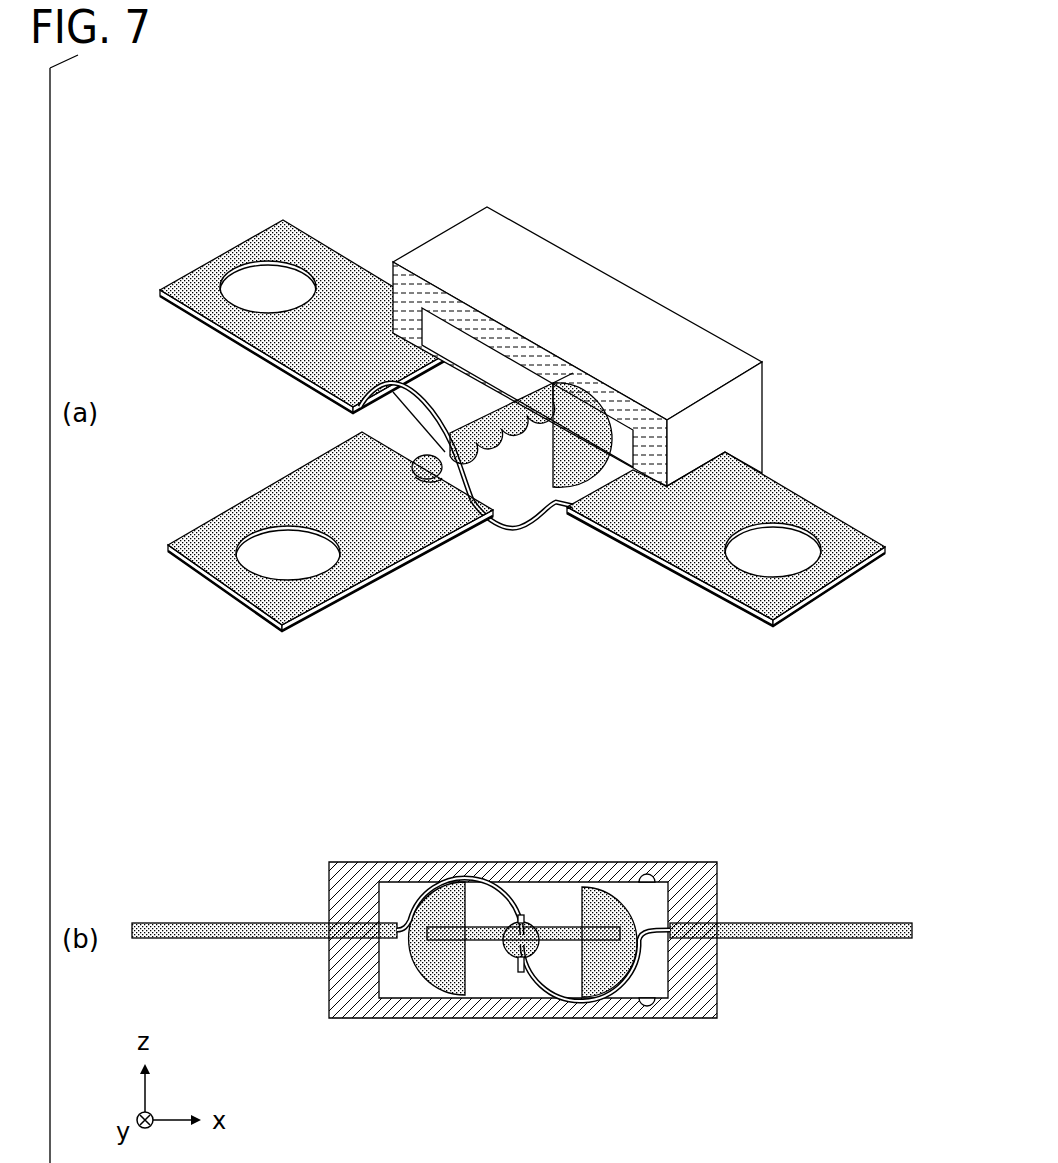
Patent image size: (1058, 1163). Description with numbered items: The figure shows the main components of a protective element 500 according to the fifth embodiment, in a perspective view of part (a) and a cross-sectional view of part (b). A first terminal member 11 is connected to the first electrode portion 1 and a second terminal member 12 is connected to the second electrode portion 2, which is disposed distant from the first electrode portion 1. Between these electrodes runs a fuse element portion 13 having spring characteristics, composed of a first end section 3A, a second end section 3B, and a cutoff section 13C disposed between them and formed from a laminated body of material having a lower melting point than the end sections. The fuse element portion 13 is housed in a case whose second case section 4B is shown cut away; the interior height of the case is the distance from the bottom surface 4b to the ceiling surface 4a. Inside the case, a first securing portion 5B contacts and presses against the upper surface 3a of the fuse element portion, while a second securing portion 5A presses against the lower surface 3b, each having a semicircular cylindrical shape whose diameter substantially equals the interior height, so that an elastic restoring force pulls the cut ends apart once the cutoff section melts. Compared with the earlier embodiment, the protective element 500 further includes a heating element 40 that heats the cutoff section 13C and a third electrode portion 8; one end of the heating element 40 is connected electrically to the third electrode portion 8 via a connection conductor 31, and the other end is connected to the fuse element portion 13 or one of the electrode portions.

The protective element 500 is at (737, 170).
The first terminal member 11 is at (223, 242).
The second terminal member 12 is at (838, 520).
The third electrode portion 8 is at (210, 540).
The second case section 4B is at (501, 250).
The first end section 3A is at (453, 377).
The cutoff section 13C is at (517, 403).
The second end section 3B is at (513, 477).
The fuse element portion 13 is at (776, 208).
The heating element 40 is at (440, 436).
The connection conductor 31 is at (415, 477).
The first electrode portion 1 is at (228, 940).
The second electrode portion 2 is at (835, 940).
The second securing portion 5A is at (446, 967).
The first securing portion 5B is at (604, 908).
The upper surface 3a is at (560, 980).
The lower surface 3b is at (493, 898).
The ceiling surface 4a is at (650, 882).
The bottom surface 4b is at (650, 998).